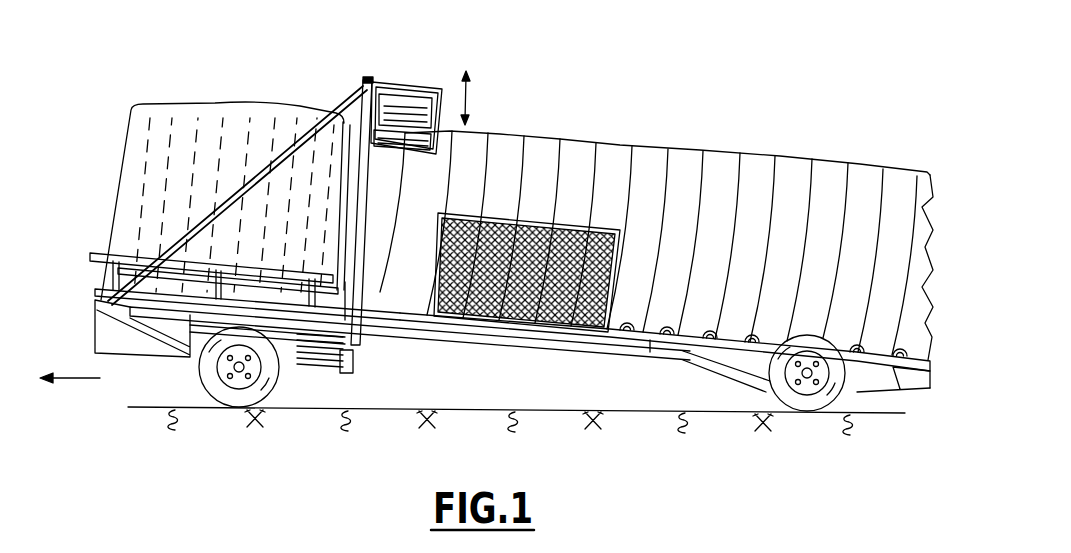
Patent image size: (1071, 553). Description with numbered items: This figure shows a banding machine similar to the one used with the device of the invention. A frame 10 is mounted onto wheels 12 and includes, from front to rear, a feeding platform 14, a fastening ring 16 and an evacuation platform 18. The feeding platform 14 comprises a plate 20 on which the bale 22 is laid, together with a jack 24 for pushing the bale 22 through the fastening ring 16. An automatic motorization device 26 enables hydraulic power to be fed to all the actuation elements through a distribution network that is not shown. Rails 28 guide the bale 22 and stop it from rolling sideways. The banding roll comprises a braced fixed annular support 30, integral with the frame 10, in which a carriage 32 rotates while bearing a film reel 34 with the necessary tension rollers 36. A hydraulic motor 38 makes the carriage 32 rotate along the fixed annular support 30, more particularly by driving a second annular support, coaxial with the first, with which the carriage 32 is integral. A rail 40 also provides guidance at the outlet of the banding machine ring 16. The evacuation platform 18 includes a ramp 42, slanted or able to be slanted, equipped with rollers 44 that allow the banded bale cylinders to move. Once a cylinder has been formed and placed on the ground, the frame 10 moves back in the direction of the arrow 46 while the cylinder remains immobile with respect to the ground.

The frame 10 is at (475, 354).
The wheels 12 is at (802, 408).
The feeding platform 14 is at (88, 301).
The fastening ring 16 is at (347, 102).
The evacuation platform 18 is at (650, 352).
The plate 20 is at (157, 258).
The bale 22 is at (213, 138).
The jack 24 is at (282, 333).
The automatic motorization device 26 is at (135, 347).
The rails 28 is at (95, 252).
The fixed annular support 30 is at (368, 78).
The carriage 32 is at (389, 84).
The film reel 34 is at (415, 108).
The tension rollers 36 is at (402, 152).
The hydraulic motor 38 is at (326, 374).
The rail 40 is at (567, 330).
The ramp 42 is at (867, 353).
The rollers 44 is at (680, 330).
The arrow 46 is at (78, 381).